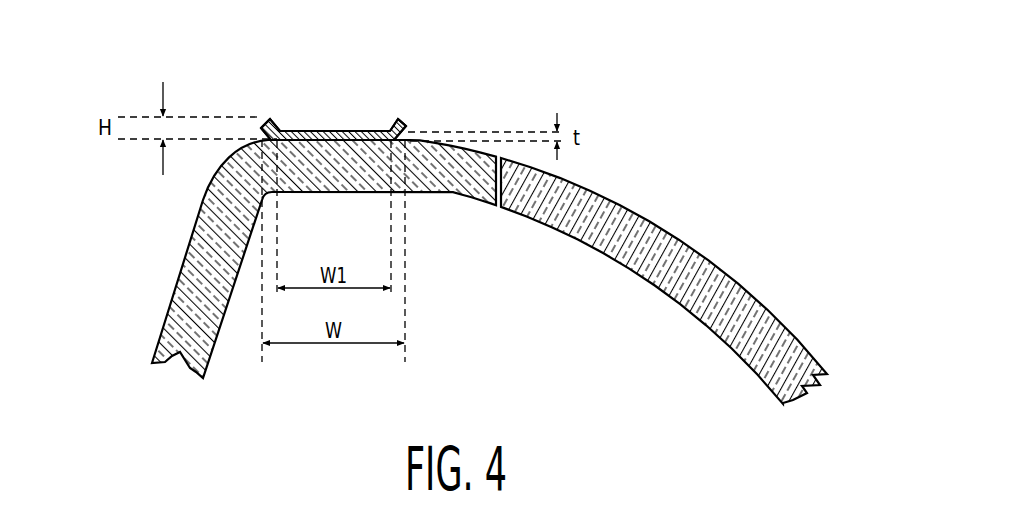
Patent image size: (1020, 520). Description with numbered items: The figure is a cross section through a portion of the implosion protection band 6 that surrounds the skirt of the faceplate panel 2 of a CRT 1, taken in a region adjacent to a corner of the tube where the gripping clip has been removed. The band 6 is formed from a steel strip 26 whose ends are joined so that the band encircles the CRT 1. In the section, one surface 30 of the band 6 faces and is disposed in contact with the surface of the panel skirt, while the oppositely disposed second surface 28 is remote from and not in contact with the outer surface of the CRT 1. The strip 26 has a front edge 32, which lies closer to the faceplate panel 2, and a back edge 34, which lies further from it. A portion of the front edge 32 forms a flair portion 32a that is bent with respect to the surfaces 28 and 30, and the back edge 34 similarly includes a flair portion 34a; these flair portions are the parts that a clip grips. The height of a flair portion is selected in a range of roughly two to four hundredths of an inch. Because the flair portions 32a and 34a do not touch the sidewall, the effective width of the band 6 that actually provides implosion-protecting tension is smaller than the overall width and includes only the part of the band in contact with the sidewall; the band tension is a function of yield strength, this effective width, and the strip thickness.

The CRT 1 is at (592, 190).
The faceplate panel 2 is at (170, 305).
The implosion protection band 6 is at (333, 102).
The steel strip 26 is at (290, 130).
The second surface 28 is at (323, 132).
The surface 30 is at (330, 142).
The front edge 32 is at (266, 119).
The flair portion 32a is at (277, 118).
The back edge 34 is at (405, 128).
The flair portion 34a is at (400, 120).